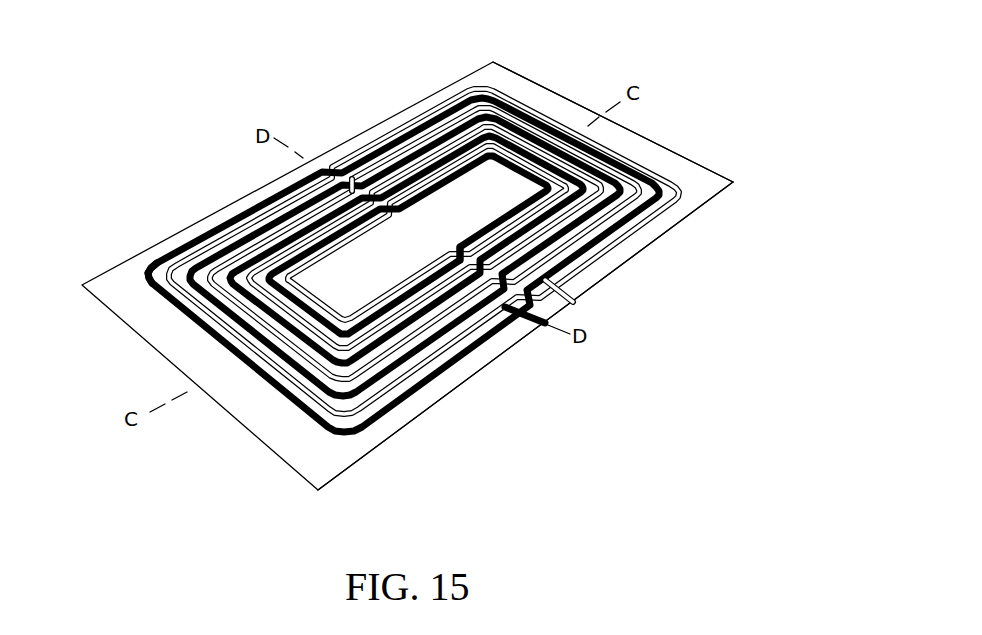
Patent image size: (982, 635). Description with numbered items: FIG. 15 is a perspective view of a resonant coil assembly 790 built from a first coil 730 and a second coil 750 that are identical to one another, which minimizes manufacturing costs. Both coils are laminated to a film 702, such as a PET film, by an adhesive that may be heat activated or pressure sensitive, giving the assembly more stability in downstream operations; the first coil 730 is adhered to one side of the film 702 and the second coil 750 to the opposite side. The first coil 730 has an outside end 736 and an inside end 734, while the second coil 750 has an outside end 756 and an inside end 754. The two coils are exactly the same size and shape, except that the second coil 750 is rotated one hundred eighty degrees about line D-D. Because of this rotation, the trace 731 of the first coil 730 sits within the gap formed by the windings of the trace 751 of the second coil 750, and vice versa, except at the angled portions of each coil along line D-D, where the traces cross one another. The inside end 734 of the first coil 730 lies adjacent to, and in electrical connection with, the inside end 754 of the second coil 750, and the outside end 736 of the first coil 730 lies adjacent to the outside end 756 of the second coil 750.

The resonant coil assembly 790 is at (703, 64).
The trace of the second coil 751 is at (700, 178).
The film 702 is at (665, 238).
The second coil 750 is at (623, 273).
The first coil 730 is at (430, 377).
The outside end of the second coil 756 is at (600, 313).
The outside end of the first coil 736 is at (560, 349).
The trace of the first coil 731 is at (155, 247).
The inside end of the second coil 754 is at (415, 258).
The inside end of the first coil 734 is at (423, 258).